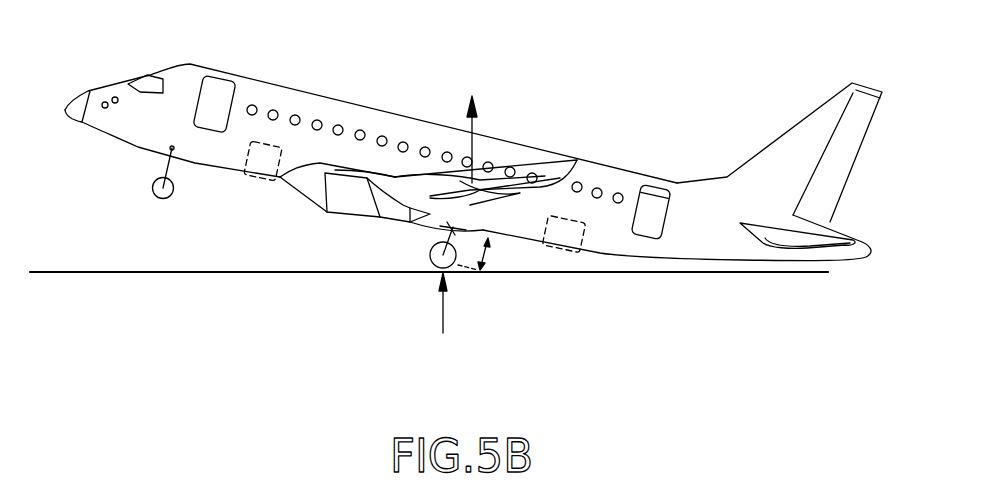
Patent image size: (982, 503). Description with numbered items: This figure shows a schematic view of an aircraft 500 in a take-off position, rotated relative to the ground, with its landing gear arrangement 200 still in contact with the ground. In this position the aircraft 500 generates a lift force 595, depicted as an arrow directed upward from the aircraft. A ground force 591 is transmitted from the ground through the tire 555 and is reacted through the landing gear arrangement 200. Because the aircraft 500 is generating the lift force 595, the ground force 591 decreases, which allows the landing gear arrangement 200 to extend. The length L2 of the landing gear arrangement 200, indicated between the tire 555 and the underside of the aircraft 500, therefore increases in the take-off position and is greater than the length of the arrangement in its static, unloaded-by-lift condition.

The aircraft 500 is at (392, 112).
The lift force 595 is at (474, 150).
The landing gear arrangement 200 is at (432, 238).
The tire 555 is at (437, 262).
The ground force 591 is at (443, 313).
The length of landing gear arrangement L2 is at (483, 250).